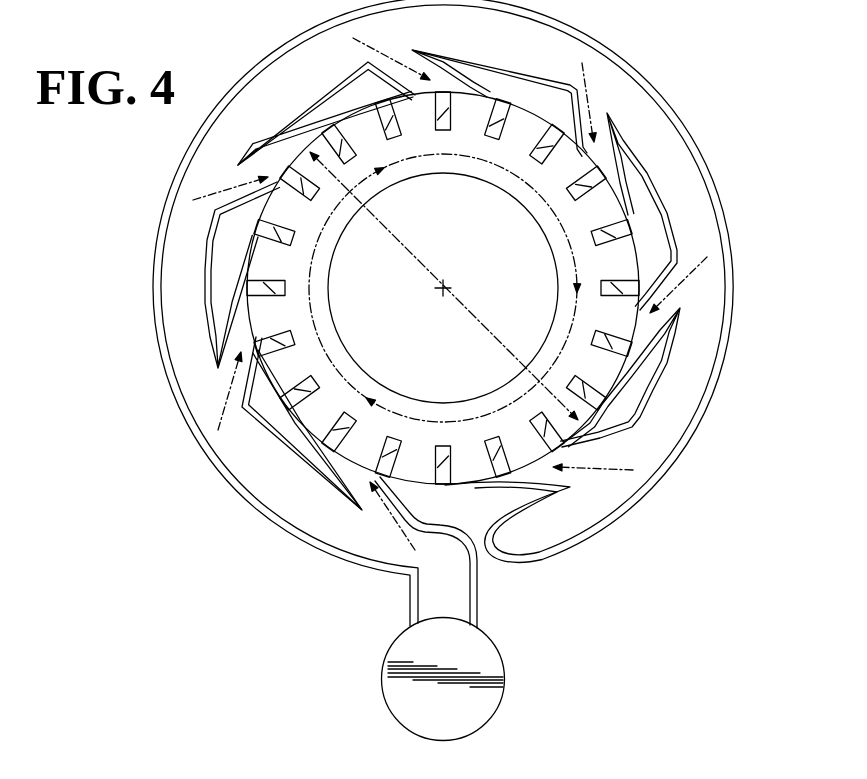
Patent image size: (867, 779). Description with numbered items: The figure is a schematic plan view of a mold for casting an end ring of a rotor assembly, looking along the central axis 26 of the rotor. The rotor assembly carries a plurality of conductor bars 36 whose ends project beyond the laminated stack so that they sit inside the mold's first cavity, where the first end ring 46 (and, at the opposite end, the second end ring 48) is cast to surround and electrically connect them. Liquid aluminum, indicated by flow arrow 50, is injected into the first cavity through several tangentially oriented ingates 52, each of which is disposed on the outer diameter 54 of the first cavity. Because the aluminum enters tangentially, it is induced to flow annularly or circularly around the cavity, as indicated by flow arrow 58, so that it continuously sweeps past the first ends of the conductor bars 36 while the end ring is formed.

The central axis 26 is at (450, 278).
The conductor bars 36 is at (262, 332).
The first end ring 46 is at (497, 280).
The second end ring 48 is at (565, 160).
The flow arrow 50 is at (215, 190).
The tangentially oriented ingate 52 is at (308, 131).
The outer diameter of the first cavity 54 is at (478, 322).
The flow arrow 58 is at (310, 260).